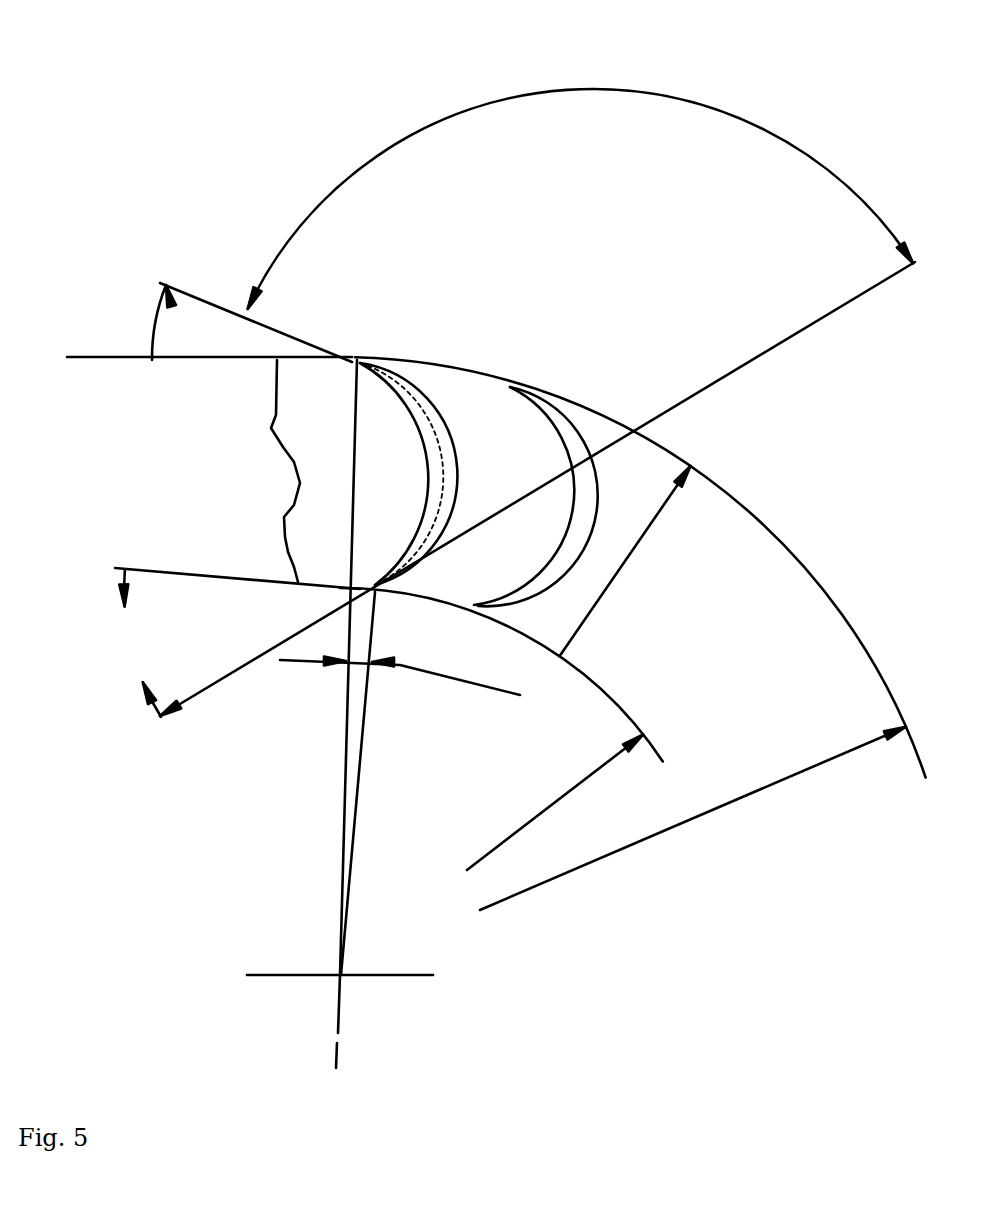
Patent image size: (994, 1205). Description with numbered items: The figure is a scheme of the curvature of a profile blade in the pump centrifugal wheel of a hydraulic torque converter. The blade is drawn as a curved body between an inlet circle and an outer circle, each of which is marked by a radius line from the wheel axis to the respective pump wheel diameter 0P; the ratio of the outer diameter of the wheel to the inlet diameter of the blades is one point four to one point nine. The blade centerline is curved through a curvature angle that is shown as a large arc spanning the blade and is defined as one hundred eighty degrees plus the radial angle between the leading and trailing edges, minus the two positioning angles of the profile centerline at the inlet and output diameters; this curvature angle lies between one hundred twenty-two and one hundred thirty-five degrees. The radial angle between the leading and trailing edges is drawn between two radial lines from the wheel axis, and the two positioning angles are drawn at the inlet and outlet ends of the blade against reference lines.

The pump wheel diameter 0P is at (633, 633).